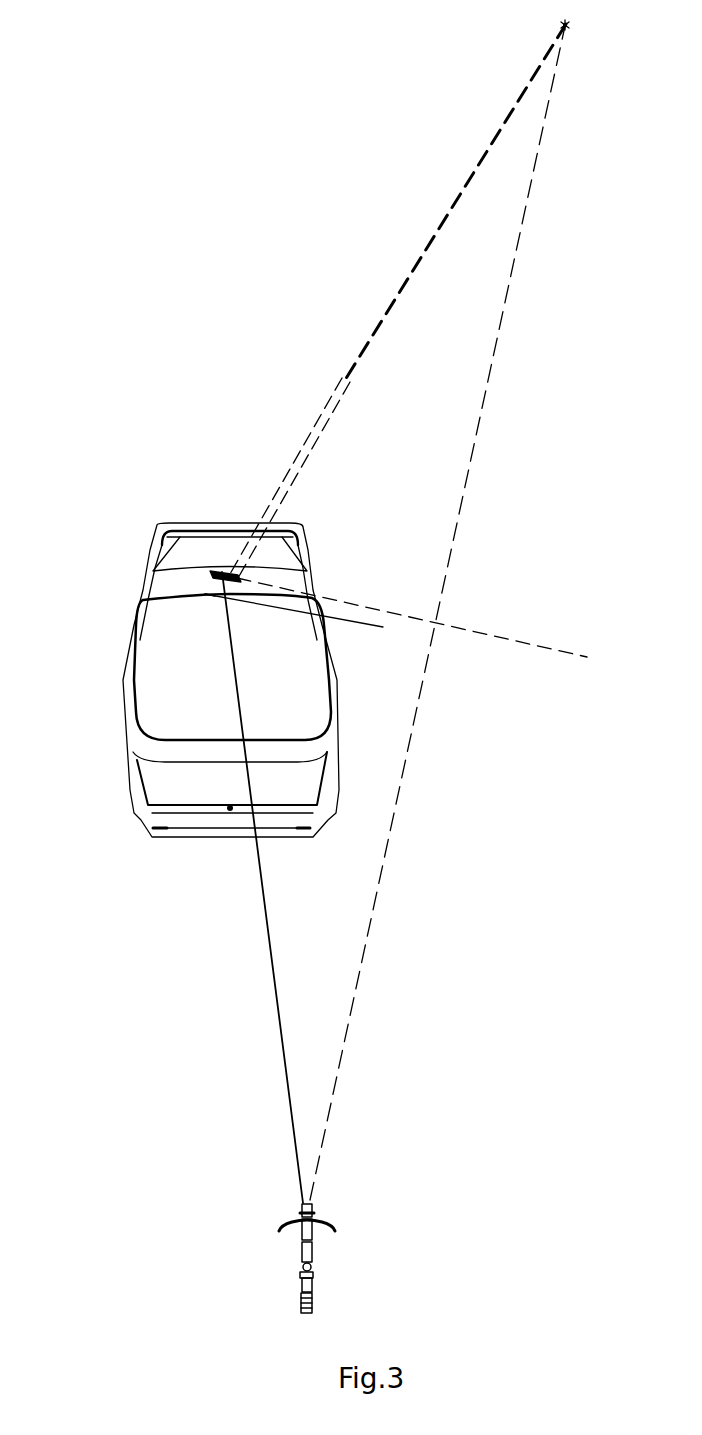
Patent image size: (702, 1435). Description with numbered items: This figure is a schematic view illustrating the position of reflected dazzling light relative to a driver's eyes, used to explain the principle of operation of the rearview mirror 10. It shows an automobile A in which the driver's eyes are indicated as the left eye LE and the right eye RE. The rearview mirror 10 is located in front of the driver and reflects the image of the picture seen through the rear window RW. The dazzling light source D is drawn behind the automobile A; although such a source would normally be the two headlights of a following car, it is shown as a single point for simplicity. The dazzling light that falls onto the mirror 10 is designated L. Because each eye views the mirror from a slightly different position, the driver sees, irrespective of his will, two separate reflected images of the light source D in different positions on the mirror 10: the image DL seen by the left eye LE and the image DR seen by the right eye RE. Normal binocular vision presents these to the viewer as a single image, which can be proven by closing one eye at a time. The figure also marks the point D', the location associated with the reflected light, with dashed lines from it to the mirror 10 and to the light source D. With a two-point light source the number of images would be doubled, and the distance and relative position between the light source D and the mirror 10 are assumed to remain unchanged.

The rearview mirror 10 is at (253, 569).
The automobile A is at (198, 680).
The dazzling light source D is at (422, 669).
The virtual image of driver D' is at (469, 196).
The dazzling light L is at (262, 877).
The reflected image seen by left eye DL is at (224, 571).
The reflected image seen by right eye DR is at (233, 572).
The left eye LE is at (210, 594).
The right eye RE is at (396, 617).
The rear window RW is at (158, 745).